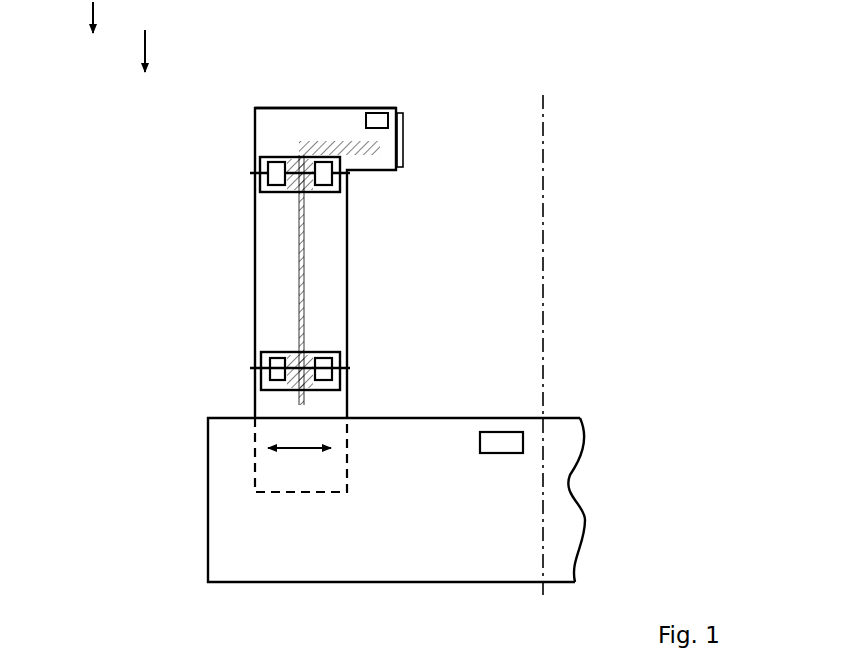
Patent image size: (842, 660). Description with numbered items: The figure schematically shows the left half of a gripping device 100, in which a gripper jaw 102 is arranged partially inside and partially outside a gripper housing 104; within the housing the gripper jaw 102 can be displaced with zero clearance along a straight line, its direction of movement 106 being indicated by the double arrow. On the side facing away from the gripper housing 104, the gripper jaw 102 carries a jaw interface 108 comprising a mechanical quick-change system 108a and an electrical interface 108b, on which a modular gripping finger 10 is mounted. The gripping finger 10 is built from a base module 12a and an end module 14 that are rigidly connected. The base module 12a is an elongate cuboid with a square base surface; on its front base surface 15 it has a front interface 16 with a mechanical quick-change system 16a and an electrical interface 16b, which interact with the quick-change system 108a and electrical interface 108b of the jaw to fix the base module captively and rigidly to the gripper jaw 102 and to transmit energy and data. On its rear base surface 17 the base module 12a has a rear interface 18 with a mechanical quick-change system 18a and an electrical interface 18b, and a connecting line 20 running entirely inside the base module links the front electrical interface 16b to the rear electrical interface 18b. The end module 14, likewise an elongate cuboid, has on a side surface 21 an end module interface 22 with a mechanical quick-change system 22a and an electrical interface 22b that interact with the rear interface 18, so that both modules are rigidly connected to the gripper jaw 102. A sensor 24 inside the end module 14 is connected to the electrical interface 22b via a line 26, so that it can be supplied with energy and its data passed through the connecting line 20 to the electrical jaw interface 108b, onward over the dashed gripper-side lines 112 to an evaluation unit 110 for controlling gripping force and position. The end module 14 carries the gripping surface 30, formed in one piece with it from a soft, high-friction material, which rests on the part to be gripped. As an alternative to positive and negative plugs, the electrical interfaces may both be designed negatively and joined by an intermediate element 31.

The gripping device 100 is at (67, 17).
The modular gripping finger 10 is at (251, 224).
The base module 12a is at (275, 272).
The end module 14 is at (318, 122).
The front base surface 15 is at (291, 352).
The front interface 16 is at (306, 352).
The mechanical quick-change system 16a is at (279, 352).
The electrical interface 16b is at (323, 352).
The rear base surface 17 is at (283, 191).
The rear interface 18 is at (313, 192).
The mechanical quick-change system 18a is at (280, 190).
The electrical interface 18b is at (325, 192).
The connecting line 20 is at (304, 268).
The side surface 21 is at (286, 156).
The end module interface 22 is at (299, 156).
The mechanical quick-change system 22a is at (282, 158).
The electrical interface 22b is at (350, 152).
The sensor 24 is at (379, 113).
The line 26 is at (332, 140).
The gripping surface 30 is at (403, 141).
The intermediate element 31 is at (260, 174).
The gripper jaw 102 is at (272, 404).
The gripper housing 104 is at (228, 489).
The direction of movement 106 is at (298, 456).
The jaw interface 108 is at (328, 390).
The mechanical quick-change system 108a is at (262, 371).
The electrical interface 108b is at (333, 389).
The evaluation unit 110 is at (500, 433).
The lines 112 is at (300, 404).